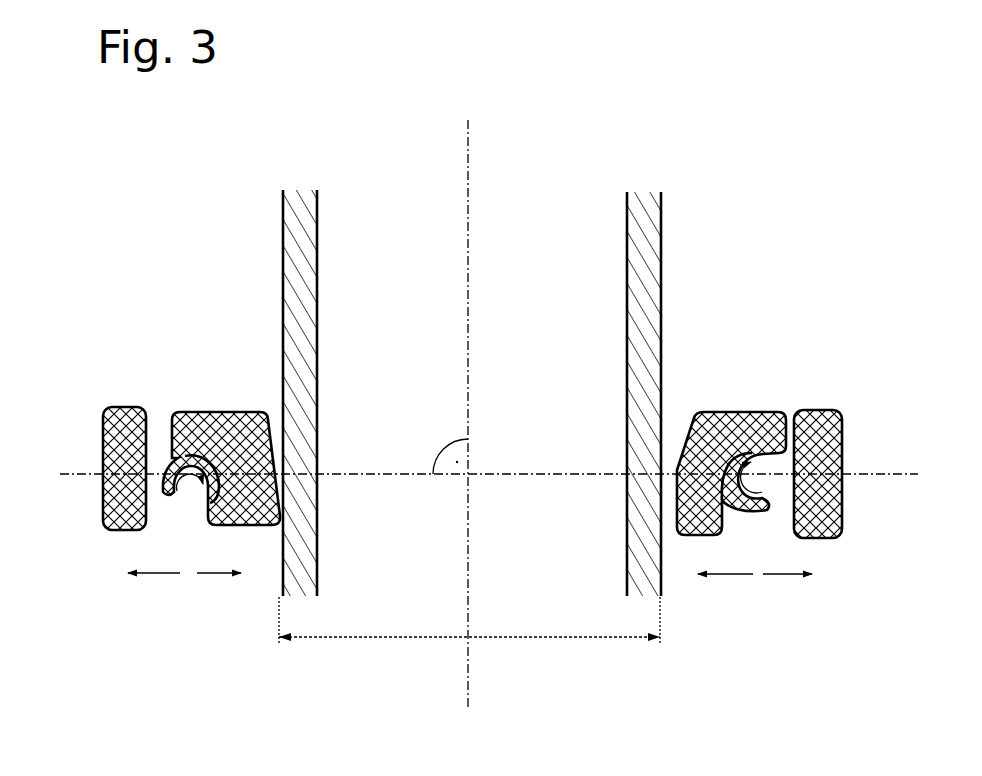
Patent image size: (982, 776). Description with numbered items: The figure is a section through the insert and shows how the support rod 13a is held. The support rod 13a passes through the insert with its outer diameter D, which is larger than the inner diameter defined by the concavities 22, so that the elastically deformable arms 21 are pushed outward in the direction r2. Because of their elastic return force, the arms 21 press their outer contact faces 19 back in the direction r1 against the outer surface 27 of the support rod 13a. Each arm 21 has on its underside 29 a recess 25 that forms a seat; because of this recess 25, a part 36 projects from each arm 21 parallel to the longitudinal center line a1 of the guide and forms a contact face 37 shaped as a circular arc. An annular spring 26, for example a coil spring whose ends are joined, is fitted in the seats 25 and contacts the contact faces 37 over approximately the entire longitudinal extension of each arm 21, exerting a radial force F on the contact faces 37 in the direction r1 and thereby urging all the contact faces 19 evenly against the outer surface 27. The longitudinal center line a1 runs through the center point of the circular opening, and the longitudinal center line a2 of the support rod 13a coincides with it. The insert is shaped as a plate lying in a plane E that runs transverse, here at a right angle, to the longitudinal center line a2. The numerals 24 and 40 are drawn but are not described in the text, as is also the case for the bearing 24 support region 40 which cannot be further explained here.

The support rod 13a is at (663, 268).
The outer contact face 19 is at (300, 500).
The elastically deformable arm 21 is at (197, 410).
The concavity 22 is at (282, 418).
The support ring 24 is at (153, 420).
The recess 25 is at (224, 410).
The annular spring 26 is at (163, 501).
The outer surface of the support rod 27 is at (281, 240).
The underside of the arm 29 is at (117, 548).
The projecting part 36 is at (237, 533).
The contact face 37 is at (207, 498).
The contact region 40 is at (163, 511).
The longitudinal center line of the guide a1 is at (469, 165).
The longitudinal center line of the support rod a2 is at (469, 188).
The outer diameter of the support rod D is at (469, 620).
The plane E is at (849, 474).
The radial force F is at (482, 482).
The direction r1 is at (475, 589).
The direction r2 is at (467, 589).